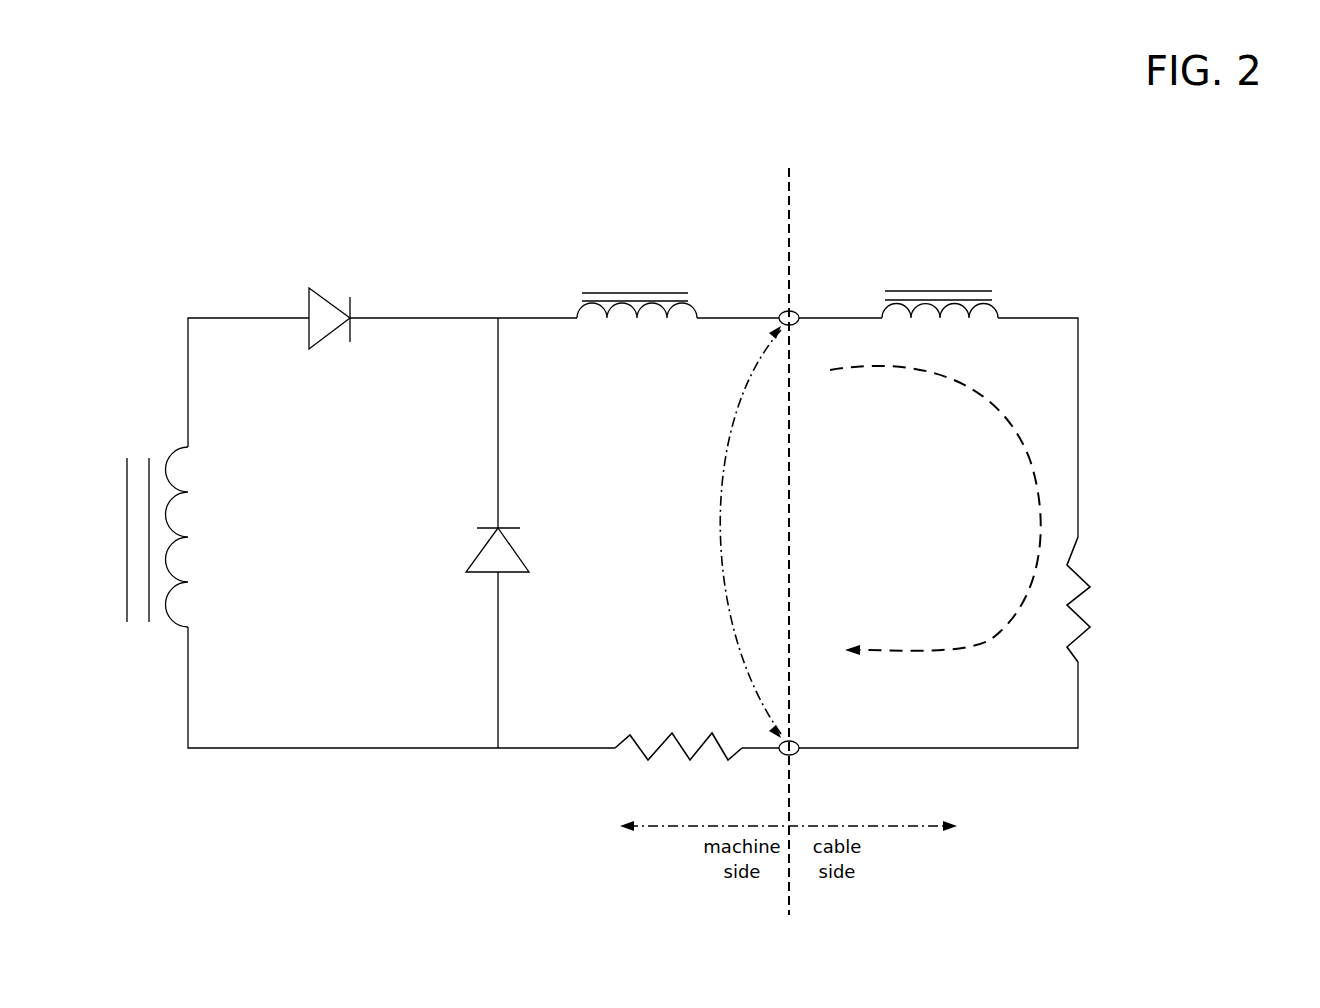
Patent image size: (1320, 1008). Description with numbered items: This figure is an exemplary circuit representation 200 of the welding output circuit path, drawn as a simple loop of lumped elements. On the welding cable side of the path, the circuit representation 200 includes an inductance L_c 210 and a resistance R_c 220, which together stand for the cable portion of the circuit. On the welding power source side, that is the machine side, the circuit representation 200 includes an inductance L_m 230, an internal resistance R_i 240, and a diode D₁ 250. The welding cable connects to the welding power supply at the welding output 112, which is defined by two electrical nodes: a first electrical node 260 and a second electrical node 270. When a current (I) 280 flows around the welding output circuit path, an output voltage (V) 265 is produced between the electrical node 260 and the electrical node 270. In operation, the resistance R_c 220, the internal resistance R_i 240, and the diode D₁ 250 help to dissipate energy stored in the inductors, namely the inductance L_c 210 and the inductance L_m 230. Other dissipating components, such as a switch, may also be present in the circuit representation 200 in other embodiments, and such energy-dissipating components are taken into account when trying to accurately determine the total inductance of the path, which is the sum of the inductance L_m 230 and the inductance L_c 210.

The circuit representation 200 is at (228, 142).
The welding output 112 is at (537, 262).
The inductance L_c 210 is at (998, 314).
The resistance R_c 220 is at (1089, 536).
The inductance L_m 230 is at (638, 318).
The internal resistance R_i 240 is at (630, 735).
The diode D_1 250 is at (480, 573).
The electrical node 260 is at (794, 754).
The output voltage 265 is at (730, 541).
The electrical node 270 is at (795, 311).
The current 280 is at (1006, 414).